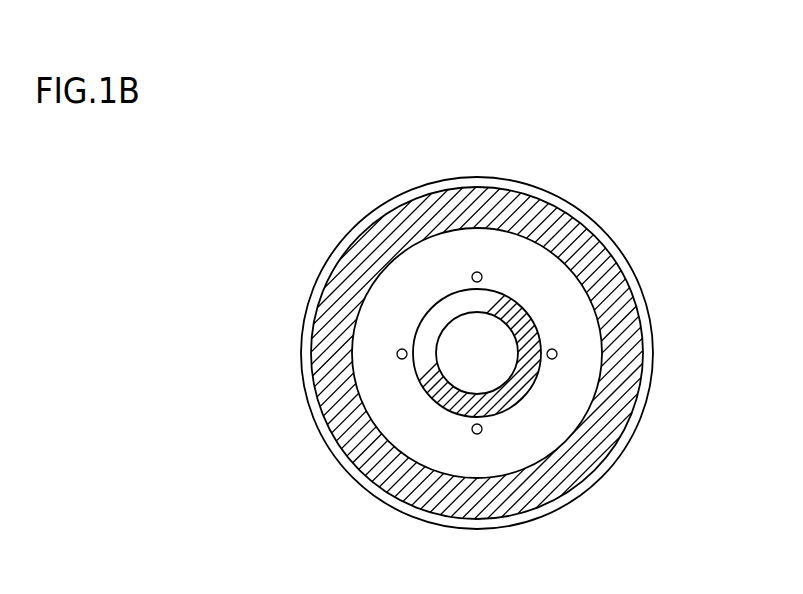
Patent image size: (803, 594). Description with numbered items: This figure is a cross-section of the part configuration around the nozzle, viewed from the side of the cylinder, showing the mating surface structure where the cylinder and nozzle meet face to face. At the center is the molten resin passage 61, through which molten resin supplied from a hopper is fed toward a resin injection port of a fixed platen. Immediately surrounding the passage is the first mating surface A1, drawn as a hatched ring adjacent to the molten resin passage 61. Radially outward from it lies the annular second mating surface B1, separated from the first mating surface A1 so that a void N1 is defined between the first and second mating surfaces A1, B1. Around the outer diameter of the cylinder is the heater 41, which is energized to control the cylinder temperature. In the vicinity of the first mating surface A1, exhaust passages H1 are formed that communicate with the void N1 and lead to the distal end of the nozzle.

The heater 41 is at (576, 213).
The molten resin passage 61 is at (493, 343).
The exhaust passage H1 is at (560, 355).
The second mating surface B1 is at (580, 467).
The void N1 is at (393, 397).
The first mating surface A1 is at (463, 405).